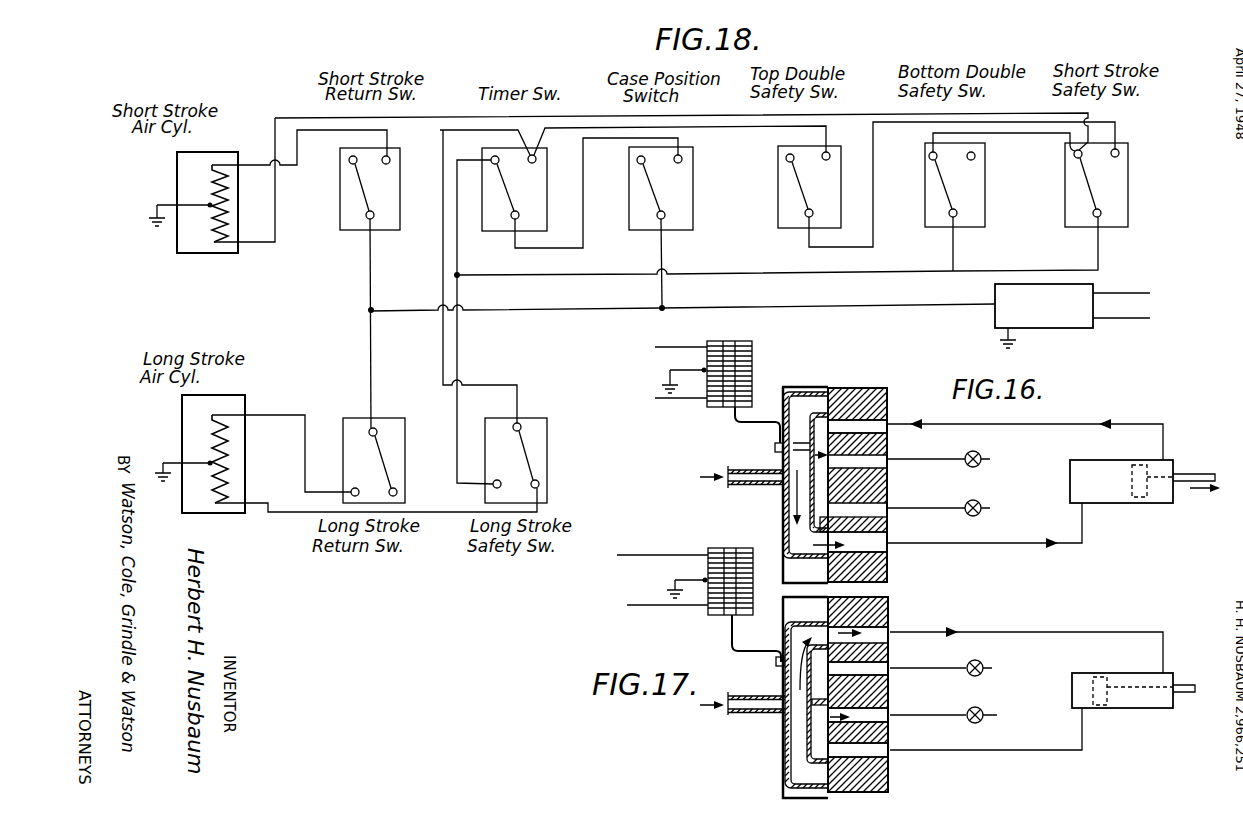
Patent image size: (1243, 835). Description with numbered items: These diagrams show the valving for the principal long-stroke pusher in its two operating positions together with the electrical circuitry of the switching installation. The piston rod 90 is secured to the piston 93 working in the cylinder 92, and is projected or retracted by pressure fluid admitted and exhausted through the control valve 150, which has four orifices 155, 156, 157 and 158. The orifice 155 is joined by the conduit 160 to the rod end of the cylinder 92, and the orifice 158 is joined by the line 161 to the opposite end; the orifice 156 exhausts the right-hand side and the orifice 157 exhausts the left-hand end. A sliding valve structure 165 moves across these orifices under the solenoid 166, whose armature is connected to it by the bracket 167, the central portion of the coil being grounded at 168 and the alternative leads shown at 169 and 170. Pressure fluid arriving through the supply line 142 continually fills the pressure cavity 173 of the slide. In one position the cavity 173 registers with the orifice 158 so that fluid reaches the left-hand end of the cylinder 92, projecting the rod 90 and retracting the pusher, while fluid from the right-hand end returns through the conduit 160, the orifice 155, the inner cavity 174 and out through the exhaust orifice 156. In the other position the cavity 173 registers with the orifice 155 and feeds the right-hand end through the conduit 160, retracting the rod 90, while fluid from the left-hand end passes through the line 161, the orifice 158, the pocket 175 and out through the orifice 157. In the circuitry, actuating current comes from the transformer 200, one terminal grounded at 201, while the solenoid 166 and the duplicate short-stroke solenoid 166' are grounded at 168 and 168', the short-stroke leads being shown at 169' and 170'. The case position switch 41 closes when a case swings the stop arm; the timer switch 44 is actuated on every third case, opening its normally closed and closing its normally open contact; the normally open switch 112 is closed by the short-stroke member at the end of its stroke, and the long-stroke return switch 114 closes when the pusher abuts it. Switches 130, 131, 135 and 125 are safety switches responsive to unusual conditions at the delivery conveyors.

In FIG. 18, the switch 112 is at (412, 196).
In FIG. 18, the timer switch 44 is at (535, 201).
In FIG. 18, the case position switch 41 is at (683, 207).
In FIG. 18, the safety switch 130 is at (832, 196).
In FIG. 18, the safety switch 131 is at (973, 203).
In FIG. 18, the safety switch 135 is at (1122, 192).
In FIG. 18, the long-stroke return switch 114 is at (351, 426).
In FIG. 18, the safety switch 125 is at (533, 445).
In FIG. 18, the solenoid 166 is at (253, 459).
In FIG. 16, the solenoid 166 is at (740, 359).
In FIG. 17, the solenoid 166 is at (719, 561).
In FIG. 18, the ground 168 is at (176, 449).
In FIG. 16, the ground 168 is at (664, 372).
In FIG. 17, the ground 168 is at (668, 581).
In FIG. 18, the lead 169 is at (281, 436).
In FIG. 16, the lead 169 is at (681, 329).
In FIG. 17, the lead 169 is at (662, 539).
In FIG. 18, the lead 170 is at (376, 494).
In FIG. 16, the lead 170 is at (677, 419).
In FIG. 17, the lead 170 is at (657, 620).
In FIG. 18, the solenoid 166' is at (252, 203).
In FIG. 18, the ground 168' is at (171, 200).
In FIG. 18, the short stroke solenoid lead 169' is at (299, 171).
In FIG. 18, the short stroke solenoid lead 170' is at (255, 198).
In FIG. 18, the transformer 200 is at (1067, 321).
In FIG. 18, the ground 201 is at (1000, 337).
In FIG. 16, the control valve 150 is at (832, 386).
In FIG. 17, the control valve 150 is at (778, 757).
In FIG. 16, the orifice 155 is at (862, 425).
In FIG. 17, the orifice 155 is at (892, 609).
In FIG. 16, the orifice 156 is at (888, 455).
In FIG. 17, the orifice 156 is at (892, 661).
In FIG. 16, the orifice 157 is at (889, 506).
In FIG. 17, the orifice 157 is at (893, 710).
In FIG. 16, the orifice 158 is at (889, 556).
In FIG. 17, the orifice 158 is at (890, 763).
In FIG. 16, the conduit 160 is at (1069, 420).
In FIG. 17, the conduit 160 is at (1068, 618).
In FIG. 16, the line 161 is at (1020, 545).
In FIG. 17, the line 161 is at (1006, 750).
In FIG. 16, the sliding valve structure 165 is at (800, 395).
In FIG. 17, the sliding valve structure 165 is at (785, 676).
In FIG. 16, the bracket 167 is at (738, 432).
In FIG. 17, the bracket 167 is at (728, 639).
In FIG. 16, the pressure cavity 173 is at (800, 393).
In FIG. 17, the pressure cavity 173 is at (787, 636).
In FIG. 16, the inner cavity 174 is at (775, 447).
In FIG. 17, the inner cavity 174 is at (892, 630).
In FIG. 16, the pocket 175 is at (887, 527).
In FIG. 17, the pocket 175 is at (800, 731).
In FIG. 16, the air supply line 142 is at (728, 482).
In FIG. 17, the air supply line 142 is at (728, 712).
In FIG. 16, the piston rod 90 is at (1198, 473).
In FIG. 17, the piston rod 90 is at (1185, 693).
In FIG. 16, the cylinder 92 is at (1070, 488).
In FIG. 17, the cylinder 92 is at (1080, 676).
In FIG. 16, the piston 93 is at (1138, 498).
In FIG. 17, the piston 93 is at (1097, 708).